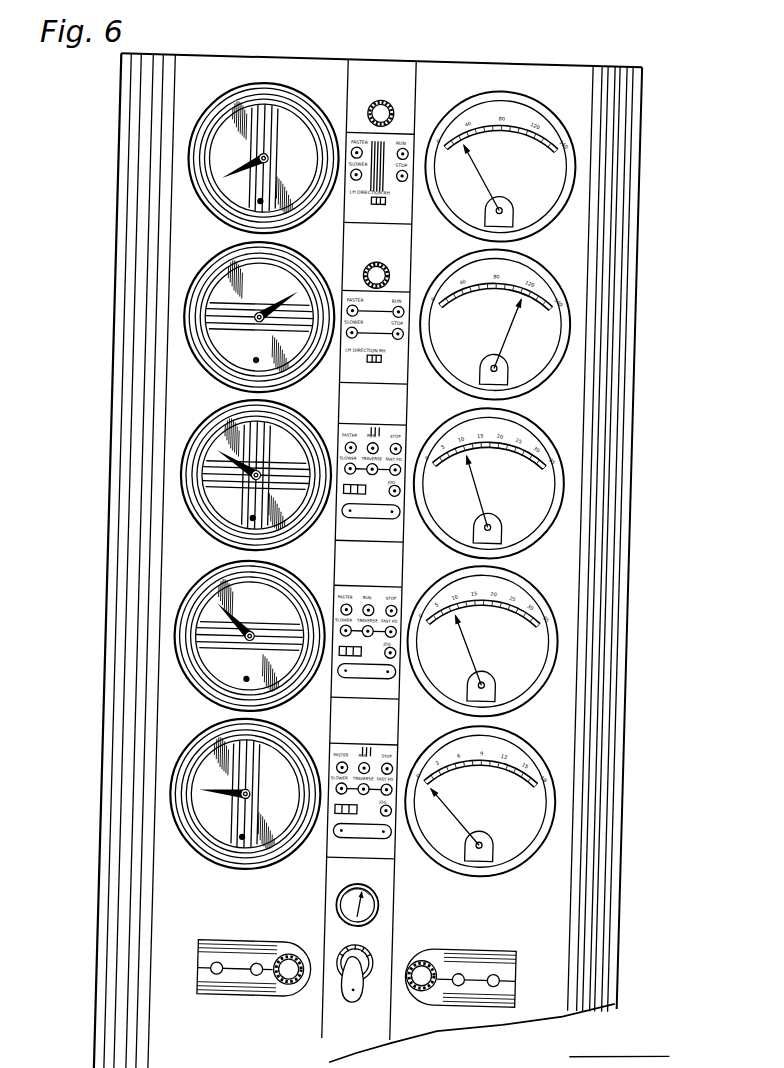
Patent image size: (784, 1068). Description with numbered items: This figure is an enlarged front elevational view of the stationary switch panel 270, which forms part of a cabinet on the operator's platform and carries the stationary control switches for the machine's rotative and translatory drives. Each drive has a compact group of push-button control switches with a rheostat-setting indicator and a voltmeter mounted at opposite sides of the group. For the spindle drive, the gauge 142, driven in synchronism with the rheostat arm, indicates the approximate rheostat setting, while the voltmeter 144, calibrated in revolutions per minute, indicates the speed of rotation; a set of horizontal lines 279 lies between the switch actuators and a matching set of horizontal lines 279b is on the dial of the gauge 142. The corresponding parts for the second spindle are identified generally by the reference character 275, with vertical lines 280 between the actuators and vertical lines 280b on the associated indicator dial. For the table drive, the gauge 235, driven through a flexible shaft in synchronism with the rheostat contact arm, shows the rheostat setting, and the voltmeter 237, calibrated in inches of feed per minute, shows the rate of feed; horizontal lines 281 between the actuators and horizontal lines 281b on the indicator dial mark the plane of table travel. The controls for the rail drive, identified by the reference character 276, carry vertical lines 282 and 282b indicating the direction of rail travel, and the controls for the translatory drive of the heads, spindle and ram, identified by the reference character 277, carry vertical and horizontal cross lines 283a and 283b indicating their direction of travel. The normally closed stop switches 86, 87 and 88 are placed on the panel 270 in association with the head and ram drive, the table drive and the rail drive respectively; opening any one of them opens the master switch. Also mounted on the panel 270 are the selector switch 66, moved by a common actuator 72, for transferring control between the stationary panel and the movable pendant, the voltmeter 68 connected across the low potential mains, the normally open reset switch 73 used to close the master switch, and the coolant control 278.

The panel 270 is at (574, 389).
The control parts for spindle 275 is at (522, 96).
The voltmeter 144 is at (527, 266).
The control parts for heads, spindle and ram drive 277 is at (537, 428).
The voltmeter 237 is at (541, 588).
The control parts for rail drive 276 is at (535, 738).
The vertical lines 280 is at (390, 128).
The vertical lines 280b is at (262, 141).
The horizontal lines 279 is at (376, 302).
The horizontal lines 279b is at (238, 337).
The gauge 142 is at (257, 312).
The cross lines 283a is at (356, 475).
The cross lines 283b is at (270, 430).
The stop switch 86 is at (352, 528).
The horizontal lines 281 is at (372, 634).
The horizontal lines 281b is at (220, 650).
The gauge 235 is at (249, 635).
The stop switch 87 is at (351, 683).
The vertical lines 282 is at (347, 798).
The vertical lines 282b is at (270, 778).
The stop switch 88 is at (344, 848).
The voltmeter 68 is at (390, 907).
The manually operable switch 66 is at (358, 976).
The common actuator 72 is at (329, 992).
The reset switch 73 is at (516, 975).
The coolant control 278 is at (224, 1004).